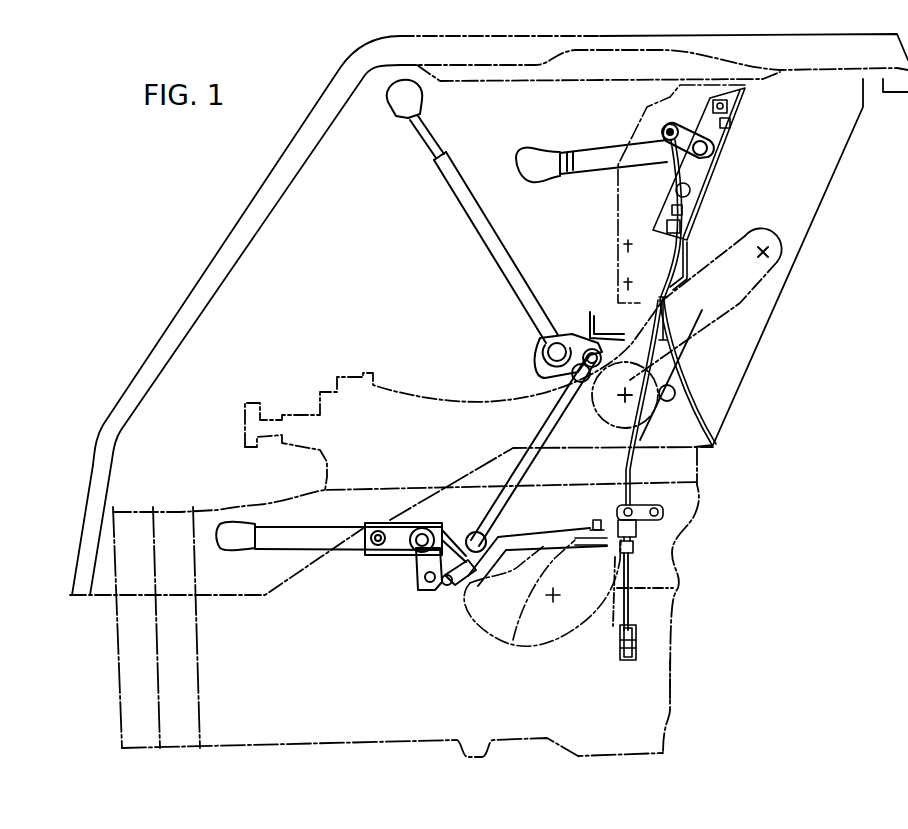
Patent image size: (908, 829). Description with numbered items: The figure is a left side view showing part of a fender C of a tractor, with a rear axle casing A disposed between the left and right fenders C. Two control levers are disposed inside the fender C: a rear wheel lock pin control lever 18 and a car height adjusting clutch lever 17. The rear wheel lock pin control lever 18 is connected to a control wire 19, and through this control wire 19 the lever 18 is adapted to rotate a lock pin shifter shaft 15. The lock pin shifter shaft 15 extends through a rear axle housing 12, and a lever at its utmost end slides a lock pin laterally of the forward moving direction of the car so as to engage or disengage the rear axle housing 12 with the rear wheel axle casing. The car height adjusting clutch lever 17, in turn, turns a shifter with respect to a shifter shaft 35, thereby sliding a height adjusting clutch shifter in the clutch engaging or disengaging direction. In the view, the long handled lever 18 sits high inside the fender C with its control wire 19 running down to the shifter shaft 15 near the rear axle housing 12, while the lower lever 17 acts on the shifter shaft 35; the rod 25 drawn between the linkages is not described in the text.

The fender C is at (181, 312).
The rear wheel lock pin control lever 18 is at (539, 156).
The car height adjusting clutch lever 17 is at (237, 521).
The control wire 19 is at (630, 478).
The lock pin shifter shaft 15 is at (619, 658).
The connecting rod 25 is at (562, 527).
The shifter shaft 35 is at (601, 525).
The rear axle housing 12 is at (487, 625).
The rear axle casing A is at (660, 677).